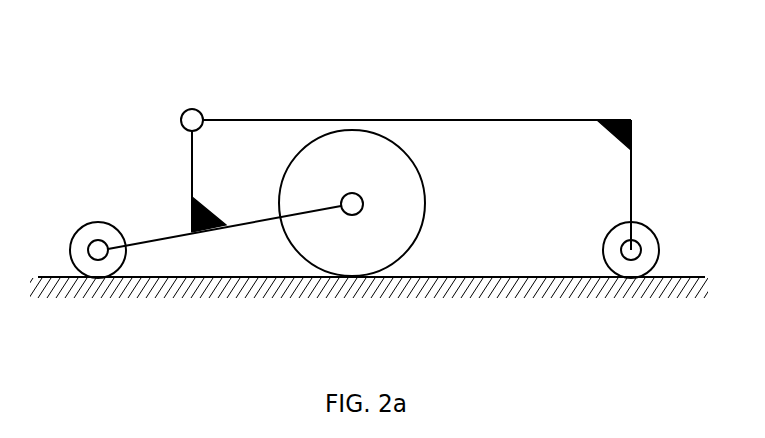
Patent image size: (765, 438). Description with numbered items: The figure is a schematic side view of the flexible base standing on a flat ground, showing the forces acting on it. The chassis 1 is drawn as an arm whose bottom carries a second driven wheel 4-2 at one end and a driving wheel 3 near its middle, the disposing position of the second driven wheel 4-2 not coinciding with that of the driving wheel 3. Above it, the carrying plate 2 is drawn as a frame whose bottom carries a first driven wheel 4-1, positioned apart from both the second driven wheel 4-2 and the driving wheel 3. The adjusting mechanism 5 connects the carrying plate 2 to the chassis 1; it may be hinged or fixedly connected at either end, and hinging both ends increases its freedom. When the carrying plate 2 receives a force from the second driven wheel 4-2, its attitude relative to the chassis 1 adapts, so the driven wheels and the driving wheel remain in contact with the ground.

The chassis 1 is at (265, 218).
The carrying plate 2 is at (332, 119).
The driving wheel 3 is at (402, 180).
The first driven wheel 4-1 is at (610, 236).
The second driven wheel 4-2 is at (80, 234).
The adjusting mechanism 5 is at (192, 112).